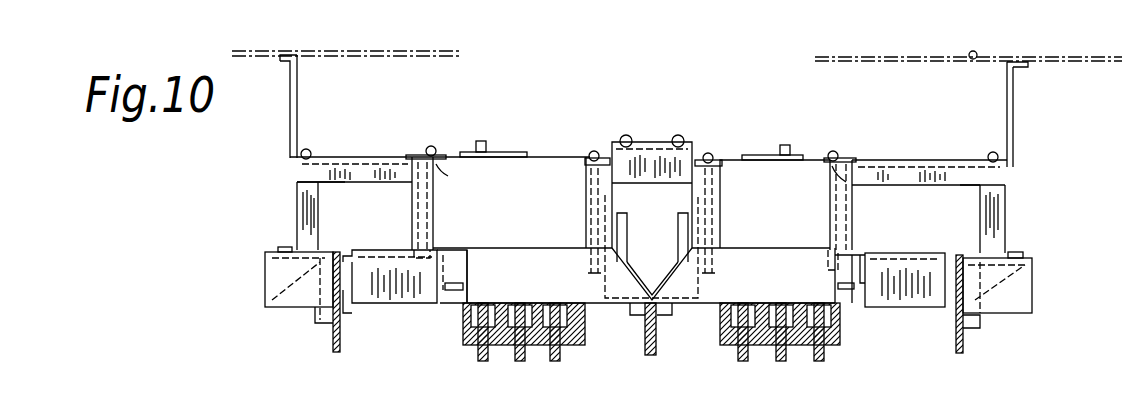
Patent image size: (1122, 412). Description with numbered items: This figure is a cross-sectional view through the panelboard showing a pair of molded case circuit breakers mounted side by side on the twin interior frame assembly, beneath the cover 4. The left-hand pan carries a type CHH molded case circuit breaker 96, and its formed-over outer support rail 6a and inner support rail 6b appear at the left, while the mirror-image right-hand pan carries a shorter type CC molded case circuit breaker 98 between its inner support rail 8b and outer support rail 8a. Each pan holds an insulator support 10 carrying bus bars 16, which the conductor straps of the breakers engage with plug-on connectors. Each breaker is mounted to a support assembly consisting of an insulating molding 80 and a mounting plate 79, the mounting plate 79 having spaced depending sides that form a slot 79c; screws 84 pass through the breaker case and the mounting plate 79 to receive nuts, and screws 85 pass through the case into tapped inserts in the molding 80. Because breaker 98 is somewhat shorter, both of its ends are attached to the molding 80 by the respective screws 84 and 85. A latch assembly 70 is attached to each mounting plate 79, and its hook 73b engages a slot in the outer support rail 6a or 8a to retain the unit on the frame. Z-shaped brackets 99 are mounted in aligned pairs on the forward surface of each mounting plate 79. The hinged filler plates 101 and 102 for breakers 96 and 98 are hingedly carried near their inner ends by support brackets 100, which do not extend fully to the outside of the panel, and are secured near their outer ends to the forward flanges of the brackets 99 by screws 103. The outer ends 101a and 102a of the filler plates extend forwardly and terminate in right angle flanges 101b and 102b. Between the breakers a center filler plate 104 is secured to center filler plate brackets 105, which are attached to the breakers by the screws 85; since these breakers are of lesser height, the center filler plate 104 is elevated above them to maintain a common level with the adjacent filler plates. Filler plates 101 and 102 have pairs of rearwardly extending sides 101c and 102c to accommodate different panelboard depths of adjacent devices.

The cover 4 is at (375, 50).
The outer support rail 6a is at (332, 352).
The inner support rail 6b is at (646, 353).
The outer support rail 8a is at (964, 346).
The inner support rail 8b is at (657, 352).
The insulator support 10 is at (465, 342).
The bus bar 16 is at (483, 361).
The latch assembly 70 is at (252, 262).
The hook 73b is at (344, 318).
The mounting plate 79 is at (378, 250).
The slot 79c is at (348, 293).
The insulating molding 80 is at (593, 300).
The screws 84 is at (422, 152).
The screws 85 is at (595, 151).
The molded case circuit breaker 96 is at (494, 144).
The molded case circuit breaker 98 is at (764, 142).
The Z-shaped brackets 99 is at (297, 190).
The support bracket 100 is at (436, 166).
The hinged filler plate 101 is at (353, 155).
The outer end 101a is at (290, 113).
The right angle flange 101b is at (286, 66).
The rearwardly extending sides 101c is at (333, 186).
The hinged filler plate 102 is at (890, 158).
The outer end 102a is at (1014, 122).
The right angle flange 102b is at (1022, 70).
The rearwardly extending sides 102c is at (975, 186).
The screws 103 is at (308, 150).
The center filler plate 104 is at (650, 140).
The center filler plate brackets 105 is at (596, 168).